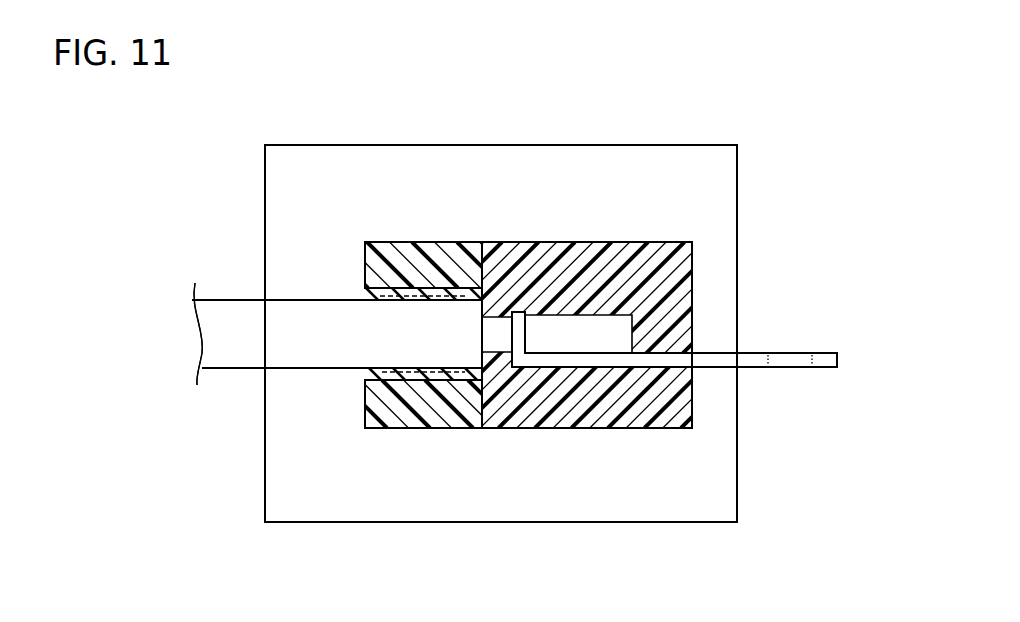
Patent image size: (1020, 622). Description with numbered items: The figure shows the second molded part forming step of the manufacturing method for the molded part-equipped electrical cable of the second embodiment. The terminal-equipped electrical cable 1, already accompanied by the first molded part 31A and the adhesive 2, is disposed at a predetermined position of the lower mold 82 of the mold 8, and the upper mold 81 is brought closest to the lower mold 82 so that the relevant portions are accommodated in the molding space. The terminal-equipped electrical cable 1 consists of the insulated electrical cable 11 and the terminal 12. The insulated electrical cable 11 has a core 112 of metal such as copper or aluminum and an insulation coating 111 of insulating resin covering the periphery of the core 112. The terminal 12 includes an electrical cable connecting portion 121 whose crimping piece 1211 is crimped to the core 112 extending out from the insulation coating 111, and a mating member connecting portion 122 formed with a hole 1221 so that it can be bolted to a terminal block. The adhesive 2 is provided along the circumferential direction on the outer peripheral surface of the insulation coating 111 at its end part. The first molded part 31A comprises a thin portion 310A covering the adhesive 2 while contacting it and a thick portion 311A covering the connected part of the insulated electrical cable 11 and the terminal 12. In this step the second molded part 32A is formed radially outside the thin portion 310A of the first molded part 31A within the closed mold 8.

The terminal-equipped electrical cable 1 is at (178, 366).
The insulated electrical cable 11 is at (235, 296).
The insulation coating 111 is at (227, 370).
The terminal 12 is at (845, 369).
The electrical cable connecting portion 121 is at (562, 365).
The crimping piece 1211 is at (517, 340).
The mating member connecting portion 122 is at (758, 362).
The hole 1221 is at (803, 351).
The adhesive 2 is at (407, 376).
The first molded part 31A is at (542, 103).
The thin portion 310A is at (454, 290).
The thick portion 311A is at (515, 250).
The second molded part 32A is at (392, 242).
The mold 8 is at (777, 75).
The upper mold 81 is at (738, 208).
The lower mold 82 is at (738, 452).
The core 112 is at (585, 327).